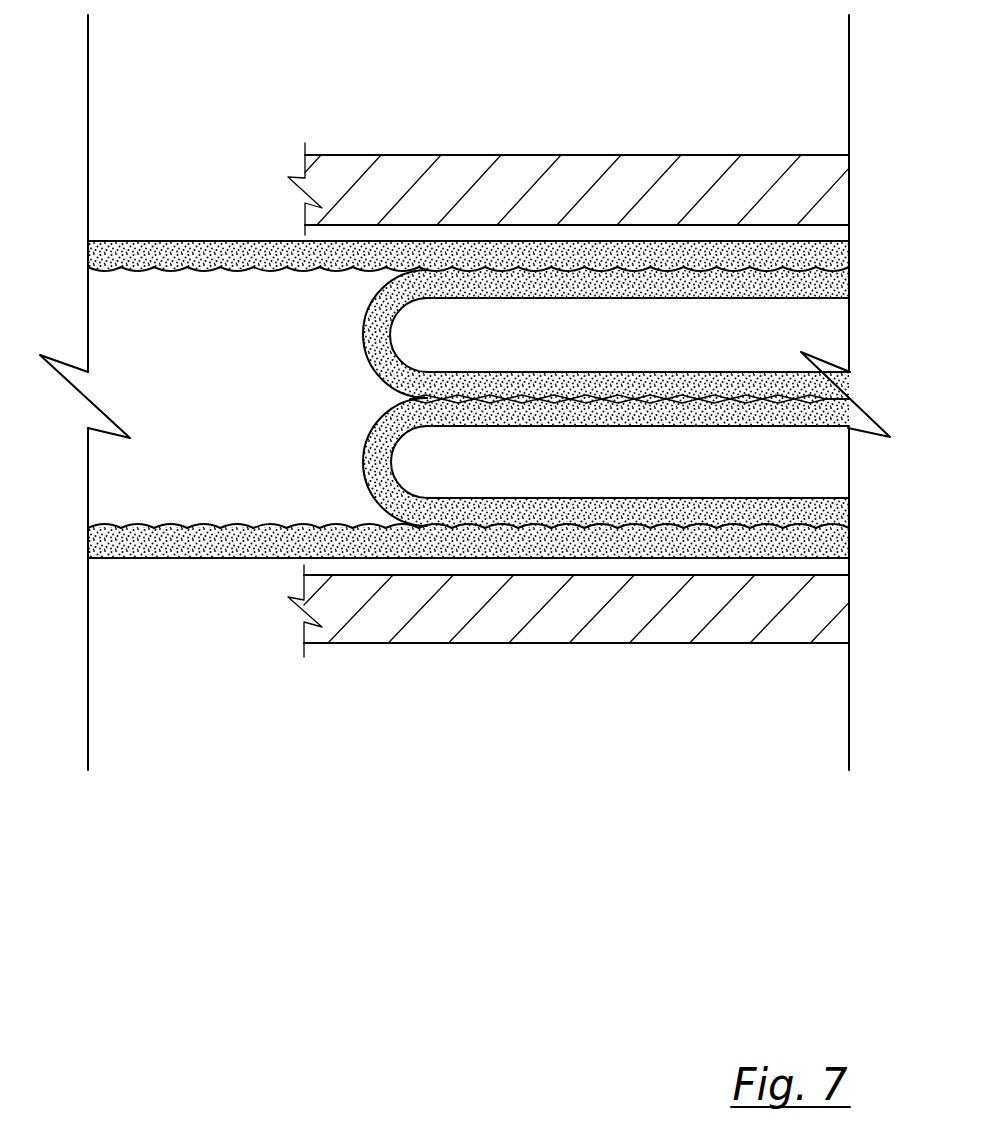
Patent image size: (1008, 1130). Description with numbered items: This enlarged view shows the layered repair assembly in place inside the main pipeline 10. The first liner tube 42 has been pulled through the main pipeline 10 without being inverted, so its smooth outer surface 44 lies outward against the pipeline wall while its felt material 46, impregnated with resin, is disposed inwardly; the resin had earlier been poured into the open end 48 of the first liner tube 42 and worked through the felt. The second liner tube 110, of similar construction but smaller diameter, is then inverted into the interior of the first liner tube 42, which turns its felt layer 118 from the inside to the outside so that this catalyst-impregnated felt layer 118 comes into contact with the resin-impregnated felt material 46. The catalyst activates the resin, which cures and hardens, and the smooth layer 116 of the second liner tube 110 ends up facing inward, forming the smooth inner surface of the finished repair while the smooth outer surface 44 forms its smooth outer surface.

The main pipeline 10 is at (382, 148).
The first liner tube 42 is at (250, 230).
The smooth outer surface 44 is at (203, 240).
The felt material 46 is at (132, 253).
The open end 48 is at (203, 560).
The second liner tube 110 is at (642, 398).
The smooth layer 116 is at (646, 297).
The felt layer 118 is at (427, 287).